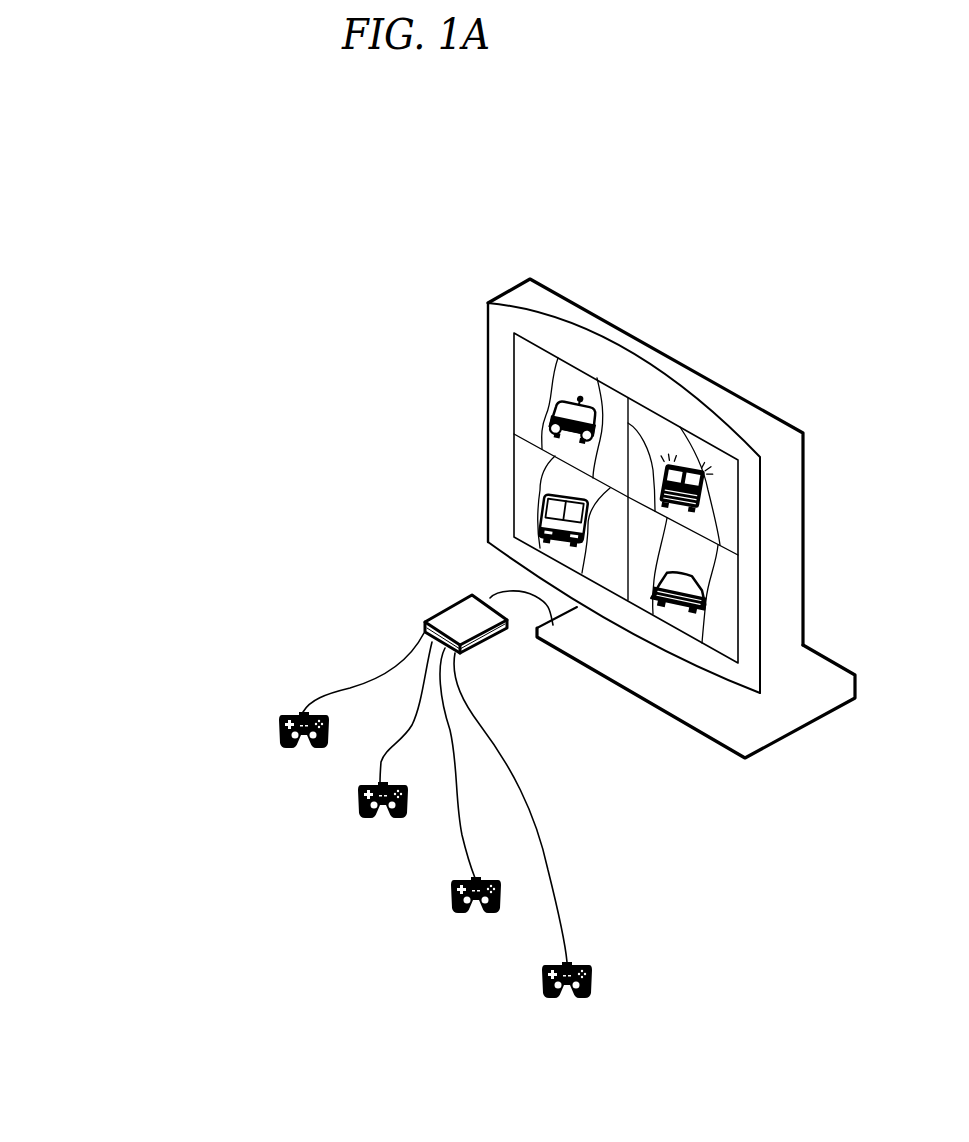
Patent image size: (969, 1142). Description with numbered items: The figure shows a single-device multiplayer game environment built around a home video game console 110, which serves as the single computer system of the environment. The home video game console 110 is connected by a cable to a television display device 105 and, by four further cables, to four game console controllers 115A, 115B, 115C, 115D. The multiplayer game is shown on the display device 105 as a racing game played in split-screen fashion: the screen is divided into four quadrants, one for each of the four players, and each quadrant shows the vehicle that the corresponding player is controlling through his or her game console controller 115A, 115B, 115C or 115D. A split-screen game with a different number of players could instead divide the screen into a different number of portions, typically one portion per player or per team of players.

The display device 105 is at (735, 308).
The home video game console 110 is at (450, 601).
The game console controller 115A is at (273, 761).
The game console controller 115B is at (370, 841).
The game console controller 115C is at (453, 936).
The game console controller 115D is at (547, 1023).